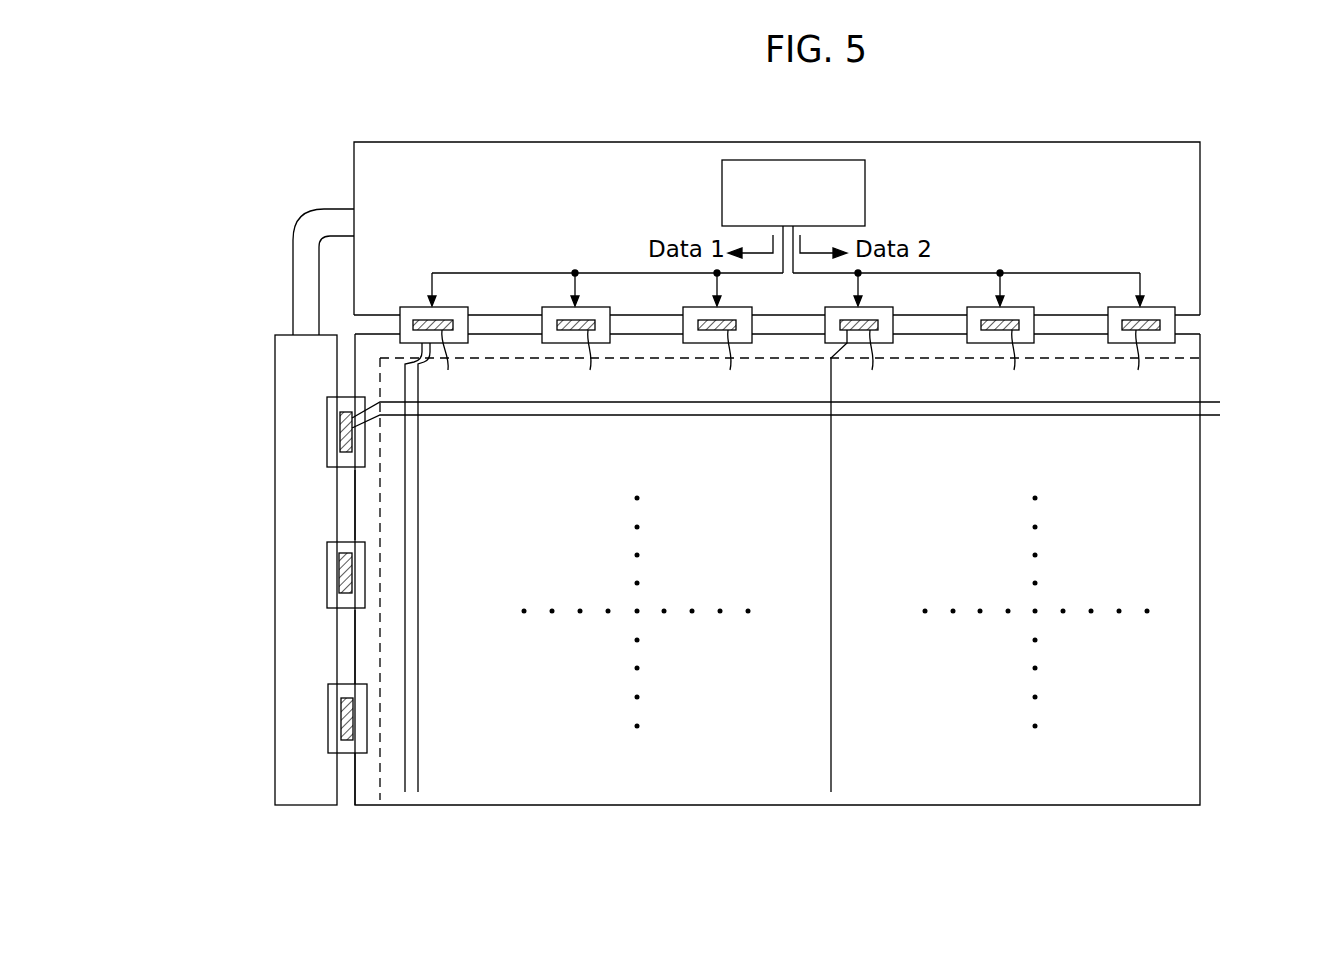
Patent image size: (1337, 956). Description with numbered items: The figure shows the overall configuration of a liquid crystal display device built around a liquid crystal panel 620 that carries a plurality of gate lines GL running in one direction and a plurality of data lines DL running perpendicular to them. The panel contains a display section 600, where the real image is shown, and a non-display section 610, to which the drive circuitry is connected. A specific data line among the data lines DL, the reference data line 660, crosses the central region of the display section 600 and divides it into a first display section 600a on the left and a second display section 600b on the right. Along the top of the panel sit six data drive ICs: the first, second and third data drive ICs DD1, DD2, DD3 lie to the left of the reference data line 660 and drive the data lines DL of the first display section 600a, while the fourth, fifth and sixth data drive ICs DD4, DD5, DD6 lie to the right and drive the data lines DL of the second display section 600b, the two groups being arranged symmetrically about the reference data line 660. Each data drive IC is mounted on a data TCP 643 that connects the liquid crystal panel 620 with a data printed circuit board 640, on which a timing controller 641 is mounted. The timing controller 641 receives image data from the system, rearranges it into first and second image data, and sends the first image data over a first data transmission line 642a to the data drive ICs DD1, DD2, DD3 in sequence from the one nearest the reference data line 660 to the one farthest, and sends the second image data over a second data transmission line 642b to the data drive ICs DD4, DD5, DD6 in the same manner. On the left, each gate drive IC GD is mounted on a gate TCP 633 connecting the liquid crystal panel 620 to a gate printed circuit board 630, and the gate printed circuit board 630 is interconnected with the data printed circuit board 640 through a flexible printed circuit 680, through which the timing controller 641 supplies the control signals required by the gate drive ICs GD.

The display section 600 is at (908, 867).
The first display section 600a is at (763, 792).
The second display section 600b is at (902, 792).
The non-display section 610 is at (366, 795).
The liquid crystal panel 620 is at (1213, 797).
The gate printed circuit board 630 is at (295, 497).
The gate TCP 633 is at (335, 412).
The data printed circuit board 640 is at (463, 142).
The timing controller 641 is at (865, 188).
The first data transmission line 642a is at (605, 270).
The second data transmission line 642b is at (970, 270).
The data TCP 643 is at (418, 310).
The reference data line 660 is at (833, 700).
The flexible printed circuit 680 is at (310, 225).
The gate drive IC GD is at (340, 445).
The gate line GL is at (468, 418).
The data line DL is at (418, 700).
The first data drive IC DD1 is at (458, 387).
The second data drive IC DD2 is at (582, 353).
The third data drive IC DD3 is at (717, 353).
The fourth data drive IC DD4 is at (865, 353).
The fifth data drive IC DD5 is at (1007, 353).
The sixth data drive IC DD6 is at (1141, 353).